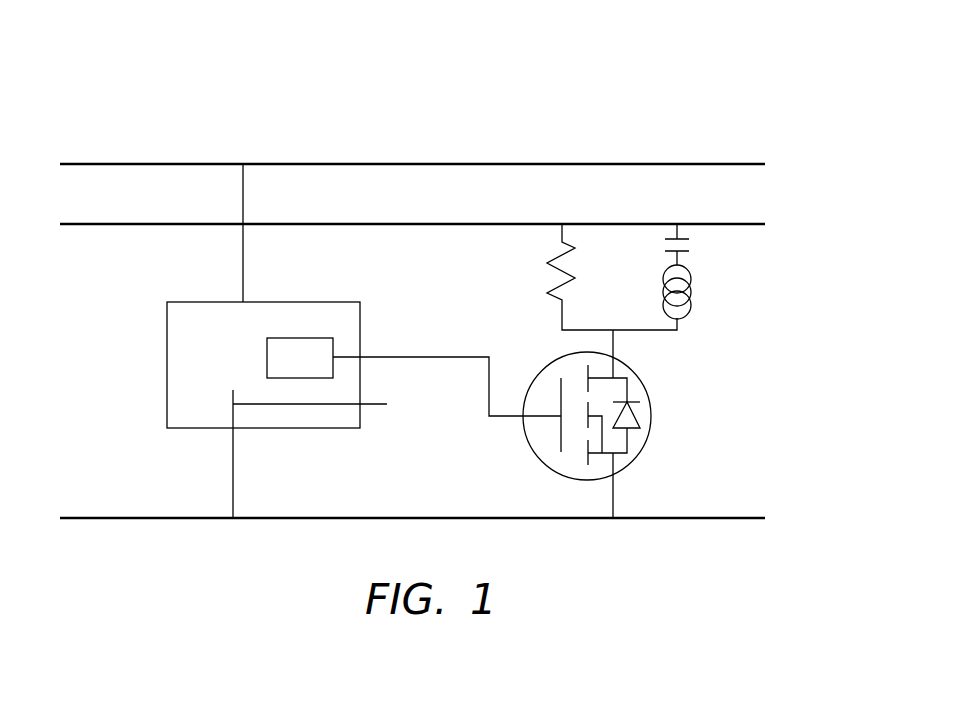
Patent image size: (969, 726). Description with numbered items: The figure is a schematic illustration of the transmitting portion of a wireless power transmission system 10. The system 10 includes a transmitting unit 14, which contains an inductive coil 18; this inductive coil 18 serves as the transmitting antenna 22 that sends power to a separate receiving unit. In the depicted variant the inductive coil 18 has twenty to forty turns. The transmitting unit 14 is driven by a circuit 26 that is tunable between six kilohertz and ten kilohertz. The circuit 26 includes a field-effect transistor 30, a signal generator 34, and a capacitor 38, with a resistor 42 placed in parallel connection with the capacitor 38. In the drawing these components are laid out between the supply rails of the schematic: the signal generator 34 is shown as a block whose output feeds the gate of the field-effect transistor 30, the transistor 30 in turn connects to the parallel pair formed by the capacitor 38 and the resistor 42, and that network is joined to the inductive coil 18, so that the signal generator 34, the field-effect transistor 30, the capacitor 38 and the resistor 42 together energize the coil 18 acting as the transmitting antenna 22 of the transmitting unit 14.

The wireless power transmission system 10 is at (716, 134).
The transmitting unit 14 is at (731, 530).
The inductive coil 18 is at (690, 300).
The transmitting antenna 22 is at (690, 274).
The circuit 26 is at (256, 538).
The field-effect transistor 30 is at (650, 442).
The signal generator 34 is at (166, 375).
The capacitor 38 is at (663, 233).
The resistor 42 is at (541, 262).